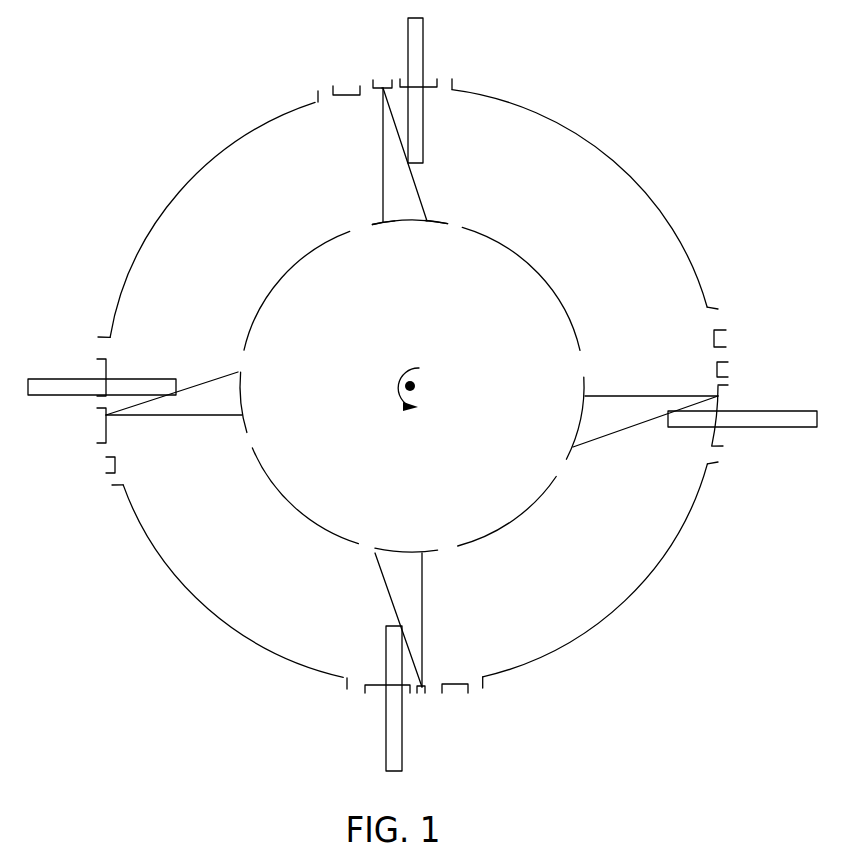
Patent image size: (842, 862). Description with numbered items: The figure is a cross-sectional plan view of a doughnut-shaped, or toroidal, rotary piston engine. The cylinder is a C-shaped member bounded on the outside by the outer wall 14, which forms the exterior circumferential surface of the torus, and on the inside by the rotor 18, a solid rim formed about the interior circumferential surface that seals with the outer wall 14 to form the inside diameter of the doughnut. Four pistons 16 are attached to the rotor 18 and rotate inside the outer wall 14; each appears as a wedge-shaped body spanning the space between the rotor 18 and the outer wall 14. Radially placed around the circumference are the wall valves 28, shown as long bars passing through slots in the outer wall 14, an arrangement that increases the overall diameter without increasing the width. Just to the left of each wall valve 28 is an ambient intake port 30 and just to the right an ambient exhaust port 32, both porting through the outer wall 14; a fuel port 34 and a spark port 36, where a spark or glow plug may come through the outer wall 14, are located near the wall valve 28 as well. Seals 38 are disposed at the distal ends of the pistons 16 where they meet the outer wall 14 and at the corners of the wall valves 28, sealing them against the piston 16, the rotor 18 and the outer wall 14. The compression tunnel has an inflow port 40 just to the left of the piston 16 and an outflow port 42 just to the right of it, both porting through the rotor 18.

The outer wall 14 is at (597, 143).
The piston 16 is at (382, 172).
The rotor 18 is at (303, 255).
The wall valve 28 is at (424, 35).
The ambient intake port 30 is at (322, 92).
The ambient exhaust port 32 is at (452, 80).
The fuel port 34 is at (394, 78).
The spark port 36 is at (367, 80).
The seal 38 is at (413, 163).
The inflow port 40 is at (364, 225).
The outflow port 42 is at (450, 225).